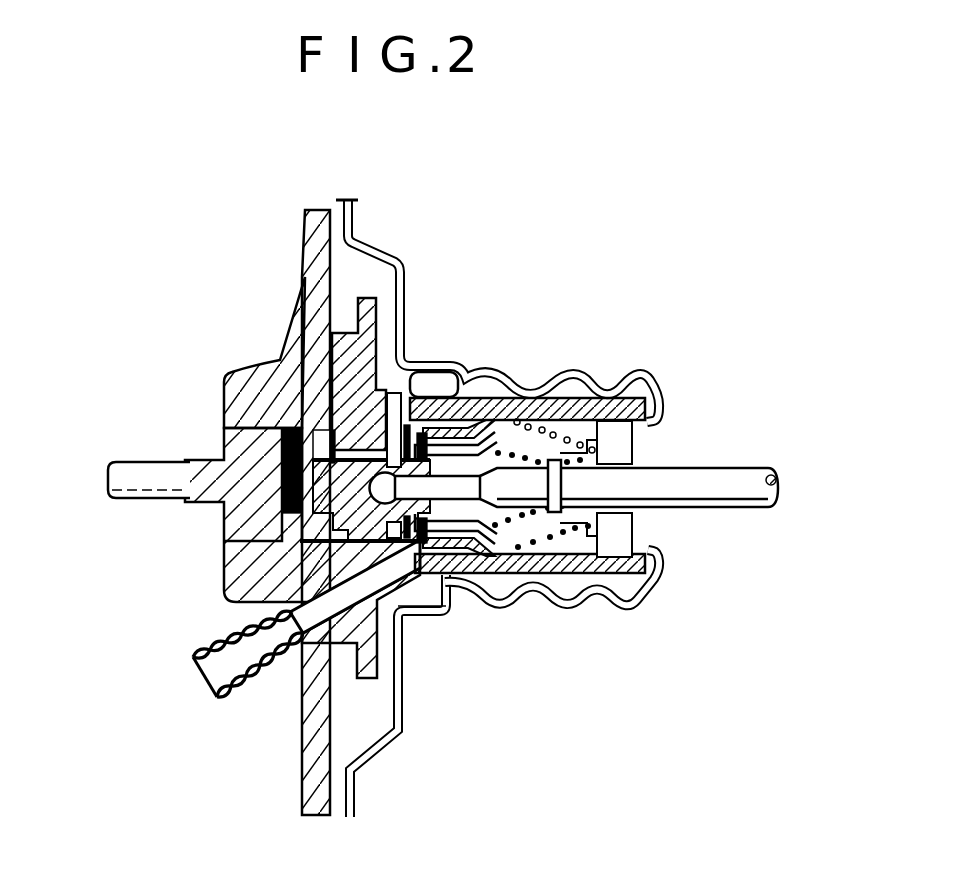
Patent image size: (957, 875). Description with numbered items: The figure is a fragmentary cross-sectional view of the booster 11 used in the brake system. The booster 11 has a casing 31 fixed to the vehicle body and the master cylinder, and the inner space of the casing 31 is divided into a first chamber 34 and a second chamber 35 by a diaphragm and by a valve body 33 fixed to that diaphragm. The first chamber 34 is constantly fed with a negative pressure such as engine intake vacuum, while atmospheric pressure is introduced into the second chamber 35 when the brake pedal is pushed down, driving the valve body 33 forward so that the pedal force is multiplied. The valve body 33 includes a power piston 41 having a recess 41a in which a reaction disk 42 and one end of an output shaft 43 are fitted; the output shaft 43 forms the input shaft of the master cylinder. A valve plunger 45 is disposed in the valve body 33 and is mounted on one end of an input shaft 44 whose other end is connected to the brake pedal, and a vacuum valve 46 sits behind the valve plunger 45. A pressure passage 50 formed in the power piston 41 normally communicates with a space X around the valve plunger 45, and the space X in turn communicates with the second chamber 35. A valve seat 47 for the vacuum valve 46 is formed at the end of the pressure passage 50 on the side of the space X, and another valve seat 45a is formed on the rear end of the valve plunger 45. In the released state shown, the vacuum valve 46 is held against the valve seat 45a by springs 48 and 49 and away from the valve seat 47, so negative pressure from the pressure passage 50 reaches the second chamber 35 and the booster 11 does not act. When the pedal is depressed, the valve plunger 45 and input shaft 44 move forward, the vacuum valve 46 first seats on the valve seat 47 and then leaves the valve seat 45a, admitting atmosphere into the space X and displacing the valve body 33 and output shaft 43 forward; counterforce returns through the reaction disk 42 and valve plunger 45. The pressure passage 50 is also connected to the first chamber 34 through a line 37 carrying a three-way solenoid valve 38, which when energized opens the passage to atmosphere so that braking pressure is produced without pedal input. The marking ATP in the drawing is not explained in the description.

The booster 11 is at (457, 185).
The casing 31 is at (350, 216).
The valve body 33 is at (460, 617).
The first chamber 34 is at (245, 296).
The second chamber 35 is at (368, 273).
The line 37 is at (214, 641).
The three-way solenoid valve 38 is at (217, 672).
The power piston 41 is at (237, 393).
The recess 41a is at (226, 447).
The reaction disk 42 is at (284, 504).
The output shaft 43 is at (142, 472).
The input shaft 44 is at (747, 483).
The valve plunger 45 is at (353, 403).
The valve seat 45a is at (440, 364).
The vacuum valve 46 is at (468, 380).
The valve seat 47 is at (417, 616).
The spring 48 is at (510, 527).
The spring 49 is at (553, 537).
The pressure passage 50 is at (330, 610).
The space X is at (408, 430).
The retaining ring ATP is at (622, 450).